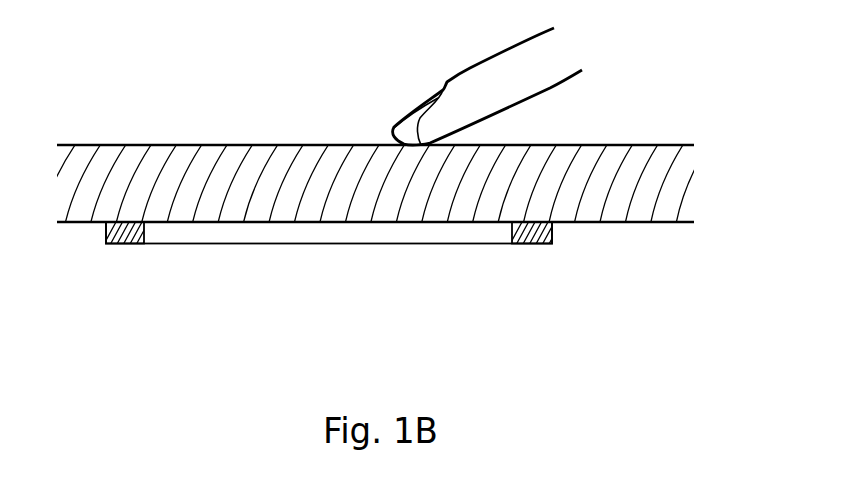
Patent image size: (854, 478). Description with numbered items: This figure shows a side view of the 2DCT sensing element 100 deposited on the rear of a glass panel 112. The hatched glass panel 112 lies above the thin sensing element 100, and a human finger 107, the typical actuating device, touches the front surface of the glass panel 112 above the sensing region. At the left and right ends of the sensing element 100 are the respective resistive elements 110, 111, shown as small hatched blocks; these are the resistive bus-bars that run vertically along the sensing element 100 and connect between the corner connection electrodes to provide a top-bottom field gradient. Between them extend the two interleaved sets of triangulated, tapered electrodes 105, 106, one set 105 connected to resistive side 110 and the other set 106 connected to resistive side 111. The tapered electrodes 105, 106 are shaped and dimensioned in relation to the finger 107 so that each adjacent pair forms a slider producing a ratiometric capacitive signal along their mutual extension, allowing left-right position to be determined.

The 2DCT sensing element 100 is at (460, 312).
The tapered electrodes 105 is at (329, 268).
The tapered electrodes 106 is at (317, 245).
The human finger 107 is at (411, 114).
The resistive element 110 is at (123, 244).
The resistive element 111 is at (535, 246).
The glass panel 112 is at (691, 188).